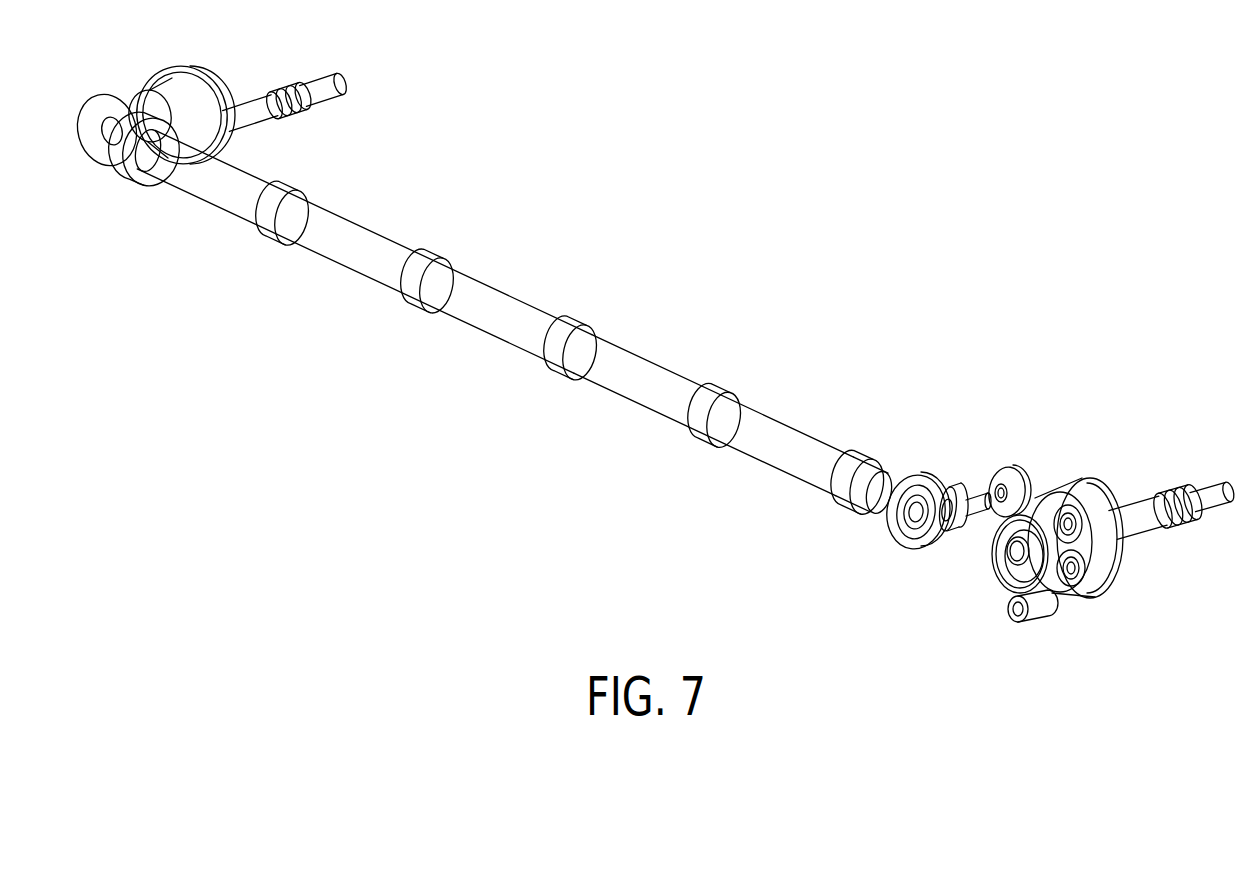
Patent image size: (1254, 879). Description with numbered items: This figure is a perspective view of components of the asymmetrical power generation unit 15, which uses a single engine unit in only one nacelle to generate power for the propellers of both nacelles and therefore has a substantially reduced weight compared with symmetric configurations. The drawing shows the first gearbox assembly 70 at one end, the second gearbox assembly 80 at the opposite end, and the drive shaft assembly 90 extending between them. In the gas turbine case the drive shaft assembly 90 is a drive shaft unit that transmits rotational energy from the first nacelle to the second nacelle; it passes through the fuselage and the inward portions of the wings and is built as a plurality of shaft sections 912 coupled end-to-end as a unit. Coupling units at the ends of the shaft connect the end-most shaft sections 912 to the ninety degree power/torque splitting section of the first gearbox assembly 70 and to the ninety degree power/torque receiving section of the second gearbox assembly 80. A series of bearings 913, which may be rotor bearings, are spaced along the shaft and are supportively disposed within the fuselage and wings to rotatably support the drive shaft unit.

The asymmetrical power generation unit 15 is at (856, 208).
The first gearbox assembly 70 is at (185, 88).
The second gearbox assembly 80 is at (1100, 562).
The drive shaft assembly 90 is at (498, 338).
The shaft sections 912 is at (637, 403).
The bearings 913 is at (432, 258).